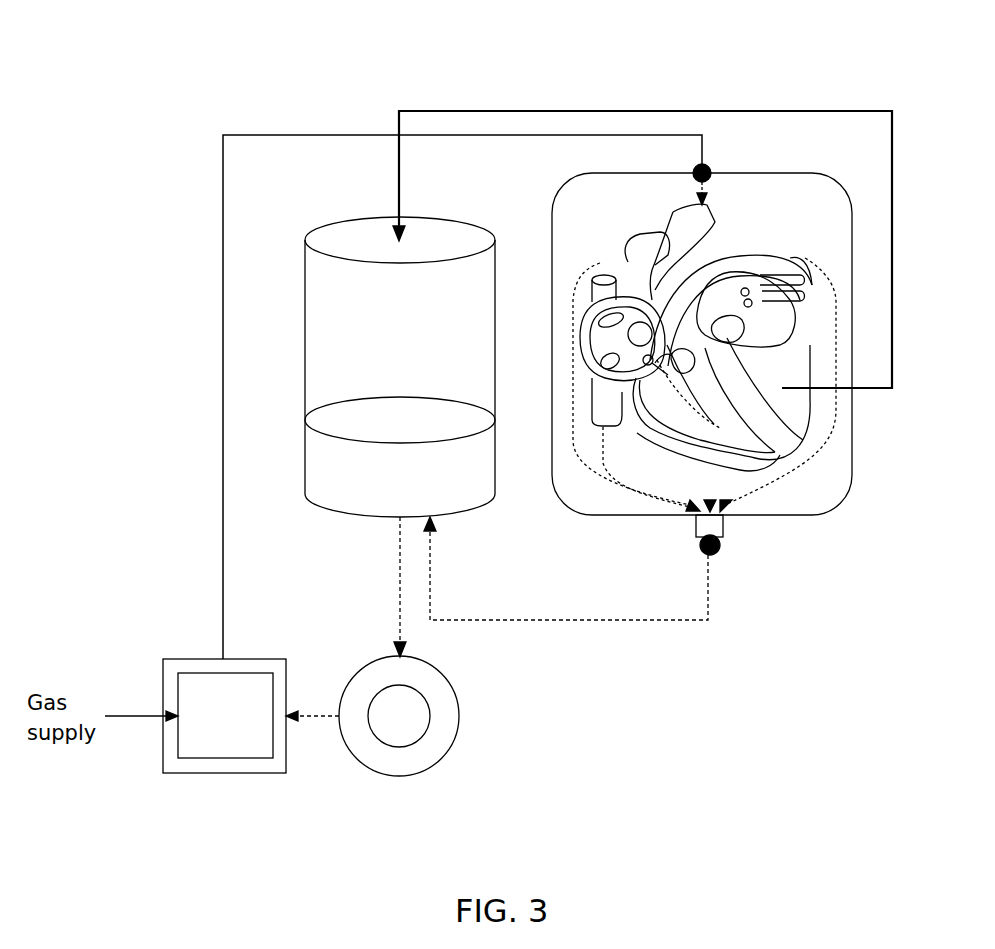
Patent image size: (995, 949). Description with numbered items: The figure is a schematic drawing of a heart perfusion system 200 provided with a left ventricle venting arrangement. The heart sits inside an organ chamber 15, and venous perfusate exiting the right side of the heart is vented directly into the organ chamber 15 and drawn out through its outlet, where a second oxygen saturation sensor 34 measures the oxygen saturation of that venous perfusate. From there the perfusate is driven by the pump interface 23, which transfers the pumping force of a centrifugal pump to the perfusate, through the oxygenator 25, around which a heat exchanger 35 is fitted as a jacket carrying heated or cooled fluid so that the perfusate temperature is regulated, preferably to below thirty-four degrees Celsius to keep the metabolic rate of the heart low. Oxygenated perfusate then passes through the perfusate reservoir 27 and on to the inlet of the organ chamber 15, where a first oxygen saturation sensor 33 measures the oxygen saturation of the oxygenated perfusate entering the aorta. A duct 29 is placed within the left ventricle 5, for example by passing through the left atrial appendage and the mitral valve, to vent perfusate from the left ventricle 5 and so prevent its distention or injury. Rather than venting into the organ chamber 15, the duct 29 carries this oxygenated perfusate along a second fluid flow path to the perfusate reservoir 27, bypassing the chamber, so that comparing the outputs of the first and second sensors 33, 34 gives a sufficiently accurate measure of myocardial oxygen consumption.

The perfusion system 200 is at (258, 110).
The first oxygen saturation sensor 33 is at (706, 167).
The duct 29 is at (877, 110).
The perfusate reservoir 27 is at (414, 341).
The left ventricle 5 is at (808, 445).
The organ chamber 15 is at (787, 516).
The second oxygen saturation sensor 34 is at (715, 552).
The heat exchanger 35 is at (205, 774).
The oxygenator 25 is at (260, 758).
The pump interface 23 is at (452, 743).